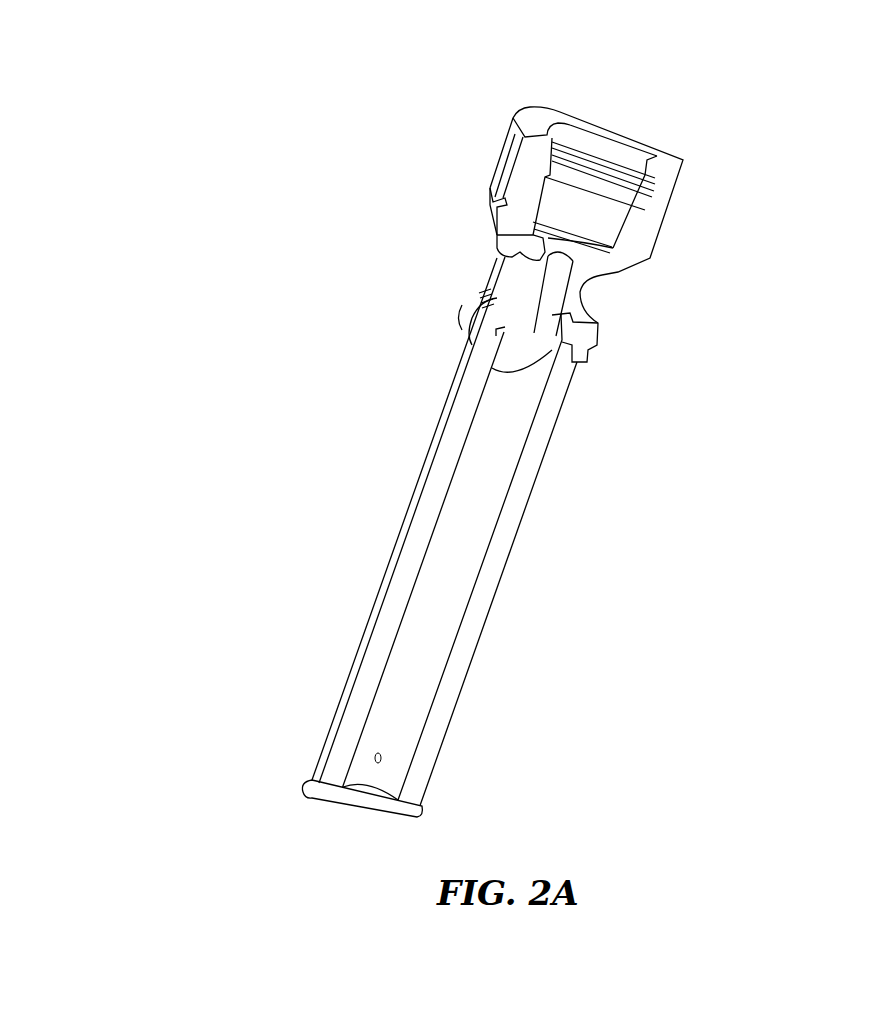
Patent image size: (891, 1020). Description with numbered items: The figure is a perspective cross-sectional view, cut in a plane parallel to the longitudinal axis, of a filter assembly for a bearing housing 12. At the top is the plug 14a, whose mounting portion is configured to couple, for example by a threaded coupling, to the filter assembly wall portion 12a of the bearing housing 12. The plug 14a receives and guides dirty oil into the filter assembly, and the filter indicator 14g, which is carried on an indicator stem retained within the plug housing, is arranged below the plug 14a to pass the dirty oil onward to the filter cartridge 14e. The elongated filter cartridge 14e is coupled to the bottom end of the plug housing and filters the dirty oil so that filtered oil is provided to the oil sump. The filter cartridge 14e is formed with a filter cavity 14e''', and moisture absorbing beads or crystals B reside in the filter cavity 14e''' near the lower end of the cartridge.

The bearing housing 12 is at (485, 188).
The filter assembly wall portion 12a is at (483, 213).
The plug 14a is at (612, 153).
The filter indicator 14g is at (573, 270).
The filter cartridge 14e is at (589, 531).
The filter cavity 14e''' is at (606, 559).
The moisture absorbing beads or crystals B is at (397, 755).